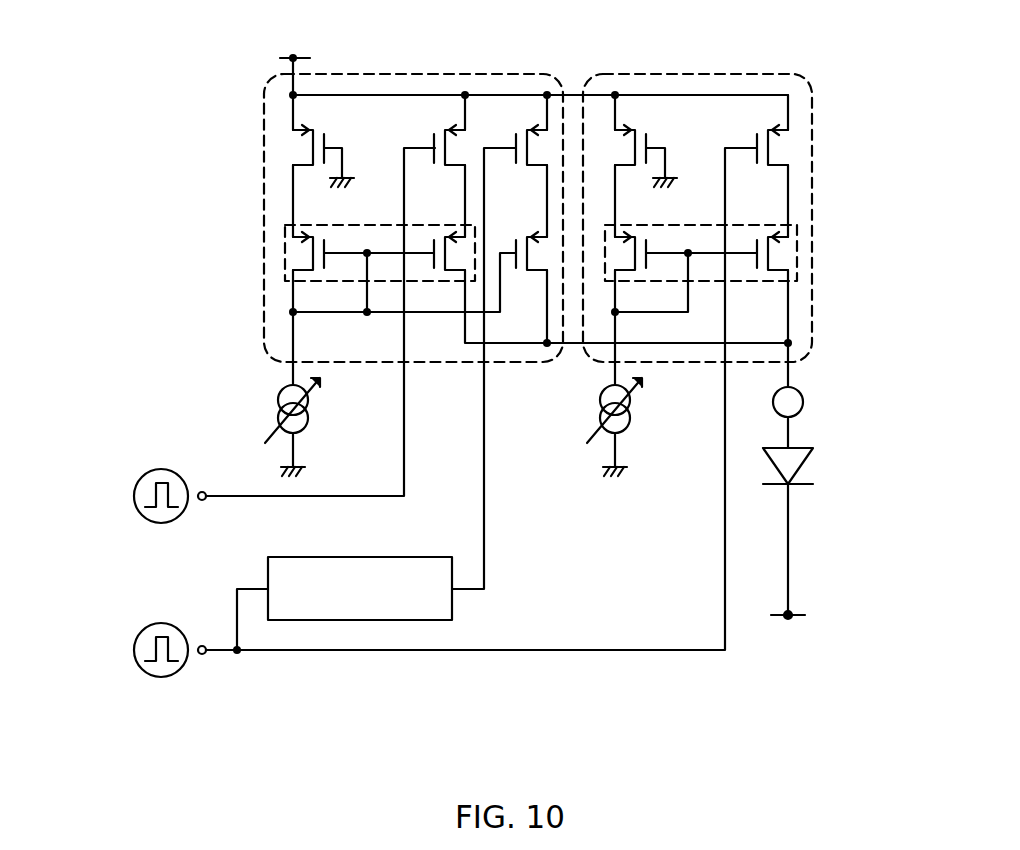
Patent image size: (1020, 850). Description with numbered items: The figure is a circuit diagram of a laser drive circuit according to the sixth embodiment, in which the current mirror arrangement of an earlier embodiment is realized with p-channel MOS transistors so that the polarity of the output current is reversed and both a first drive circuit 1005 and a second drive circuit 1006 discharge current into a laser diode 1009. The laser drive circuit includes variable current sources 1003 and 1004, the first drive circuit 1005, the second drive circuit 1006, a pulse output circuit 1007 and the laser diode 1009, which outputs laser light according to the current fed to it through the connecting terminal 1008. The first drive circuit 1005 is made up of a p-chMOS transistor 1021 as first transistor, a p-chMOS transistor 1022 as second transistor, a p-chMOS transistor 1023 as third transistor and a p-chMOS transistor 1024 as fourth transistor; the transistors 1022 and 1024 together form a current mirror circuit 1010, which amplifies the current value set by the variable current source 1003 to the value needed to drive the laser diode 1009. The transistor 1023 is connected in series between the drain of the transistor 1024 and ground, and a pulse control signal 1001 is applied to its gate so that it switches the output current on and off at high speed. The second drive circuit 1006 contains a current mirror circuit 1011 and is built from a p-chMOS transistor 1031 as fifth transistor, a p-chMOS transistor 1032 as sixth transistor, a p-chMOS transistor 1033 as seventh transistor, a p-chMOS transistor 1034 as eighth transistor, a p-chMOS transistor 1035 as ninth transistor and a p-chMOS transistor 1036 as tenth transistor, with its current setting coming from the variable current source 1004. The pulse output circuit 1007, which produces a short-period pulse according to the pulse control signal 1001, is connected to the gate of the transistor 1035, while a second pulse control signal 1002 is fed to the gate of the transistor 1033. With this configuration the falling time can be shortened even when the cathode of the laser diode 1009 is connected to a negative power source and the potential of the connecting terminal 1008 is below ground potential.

The pulse control signal 1001 is at (134, 650).
The second pulse control signal 1002 is at (134, 496).
The variable current source 1003 is at (600, 412).
The variable current source 1004 is at (278, 412).
The first drive circuit 1005 is at (814, 198).
The second drive circuit 1006 is at (266, 203).
The pulse output circuit 1007 is at (410, 557).
The connecting terminal 1008 is at (803, 402).
The laser diode 1009 is at (803, 466).
The current mirror circuit 1010 is at (799, 236).
The current mirror circuit 1011 is at (285, 238).
The p-chMOS transistor (first transistor) 1021 is at (616, 150).
The p-chMOS transistor (second transistor) 1022 is at (636, 273).
The p-chMOS transistor (third transistor) 1023 is at (797, 150).
The p-chMOS transistor (fourth transistor) 1024 is at (791, 256).
The p-chMOS transistor (fifth transistor) 1031 is at (297, 150).
The p-chMOS transistor (sixth transistor) 1032 is at (300, 256).
The p-chMOS transistor (seventh transistor) 1033 is at (463, 150).
The p-chMOS transistor (eighth transistor) 1034 is at (448, 273).
The p-chMOS transistor (ninth transistor) 1035 is at (537, 150).
The p-chMOS transistor (tenth transistor) 1036 is at (530, 273).